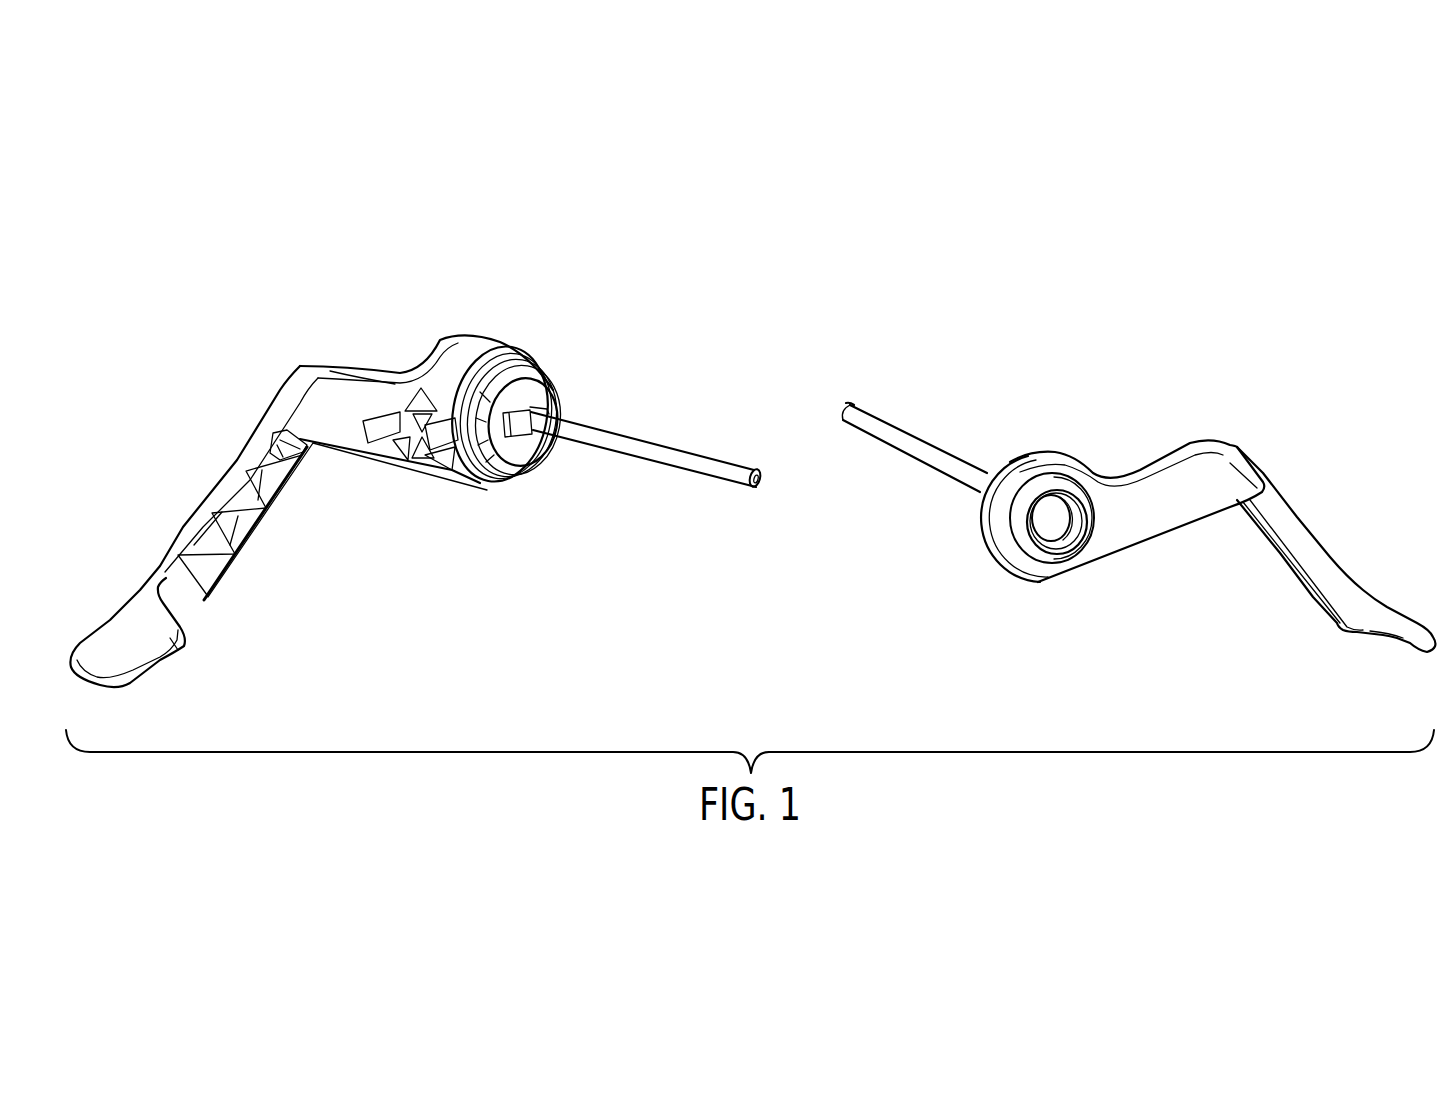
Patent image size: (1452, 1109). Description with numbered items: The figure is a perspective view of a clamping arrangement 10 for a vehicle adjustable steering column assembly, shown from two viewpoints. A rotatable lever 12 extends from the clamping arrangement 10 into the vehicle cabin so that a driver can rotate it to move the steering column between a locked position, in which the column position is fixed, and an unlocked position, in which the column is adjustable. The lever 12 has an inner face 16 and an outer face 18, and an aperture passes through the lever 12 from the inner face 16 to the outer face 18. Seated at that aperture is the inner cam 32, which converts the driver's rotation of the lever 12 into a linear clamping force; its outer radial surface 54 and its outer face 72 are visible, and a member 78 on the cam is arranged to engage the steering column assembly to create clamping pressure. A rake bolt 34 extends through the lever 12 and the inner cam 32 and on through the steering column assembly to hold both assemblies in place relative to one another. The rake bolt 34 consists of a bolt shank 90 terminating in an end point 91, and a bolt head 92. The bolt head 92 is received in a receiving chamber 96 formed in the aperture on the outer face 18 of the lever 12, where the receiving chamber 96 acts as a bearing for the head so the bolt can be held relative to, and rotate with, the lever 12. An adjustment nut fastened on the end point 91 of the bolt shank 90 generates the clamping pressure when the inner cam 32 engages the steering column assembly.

The clamping arrangement 10 is at (466, 304).
The rotatable lever 12 is at (305, 372).
The inner face 16 is at (355, 390).
The outer face 18 is at (1205, 505).
The inner cam 32 is at (556, 358).
The rake bolt 34 is at (658, 447).
The outer radial surface 54 is at (490, 455).
The outer face 72 is at (528, 449).
The member 78 is at (556, 400).
The bolt shank 90 is at (706, 470).
The end point 91 is at (759, 488).
The bolt head 92 is at (1050, 523).
The receiving chamber 96 is at (1092, 546).